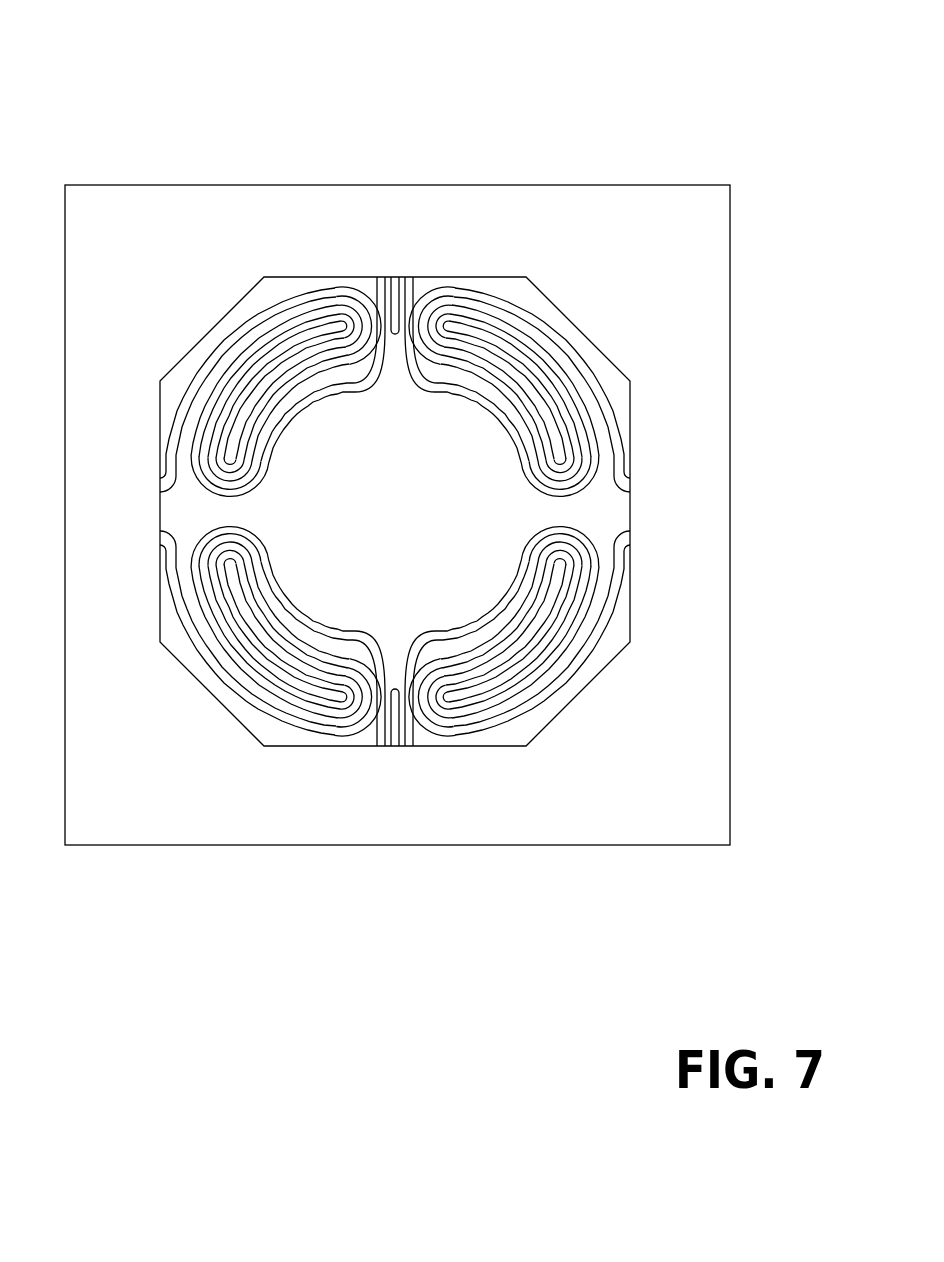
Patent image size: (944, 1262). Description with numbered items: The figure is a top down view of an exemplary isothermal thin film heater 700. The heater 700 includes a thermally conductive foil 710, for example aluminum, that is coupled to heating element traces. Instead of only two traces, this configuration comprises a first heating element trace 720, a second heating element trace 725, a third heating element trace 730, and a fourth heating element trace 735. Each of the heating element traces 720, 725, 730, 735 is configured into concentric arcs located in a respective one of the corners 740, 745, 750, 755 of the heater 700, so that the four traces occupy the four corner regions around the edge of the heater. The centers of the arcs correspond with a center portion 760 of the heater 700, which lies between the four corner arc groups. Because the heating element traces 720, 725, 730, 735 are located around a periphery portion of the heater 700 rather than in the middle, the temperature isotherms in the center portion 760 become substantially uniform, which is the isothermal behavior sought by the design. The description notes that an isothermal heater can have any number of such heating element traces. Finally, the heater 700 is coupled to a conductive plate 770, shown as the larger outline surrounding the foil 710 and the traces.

The heater 700 is at (451, 433).
The foil 710 is at (446, 277).
The first heating element trace 720 is at (510, 427).
The second heating element trace 725 is at (515, 592).
The third heating element trace 730 is at (325, 637).
The fourth heating element trace 735 is at (318, 395).
The corner 740 is at (553, 386).
The corner 745 is at (558, 636).
The corner 750 is at (253, 636).
The corner 755 is at (257, 386).
The center portion 760 is at (430, 527).
The conductive plate 770 is at (732, 453).